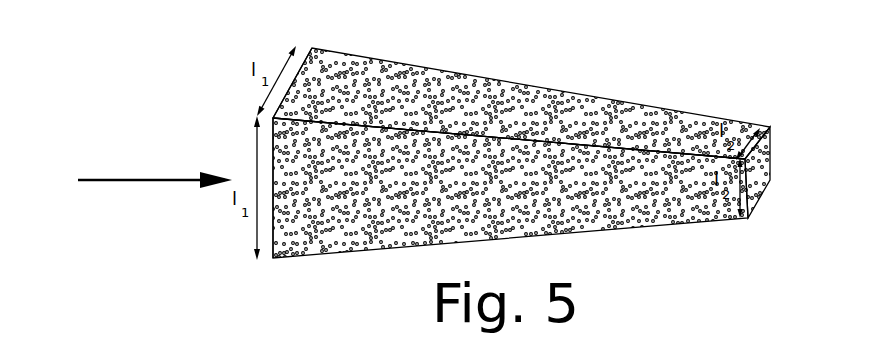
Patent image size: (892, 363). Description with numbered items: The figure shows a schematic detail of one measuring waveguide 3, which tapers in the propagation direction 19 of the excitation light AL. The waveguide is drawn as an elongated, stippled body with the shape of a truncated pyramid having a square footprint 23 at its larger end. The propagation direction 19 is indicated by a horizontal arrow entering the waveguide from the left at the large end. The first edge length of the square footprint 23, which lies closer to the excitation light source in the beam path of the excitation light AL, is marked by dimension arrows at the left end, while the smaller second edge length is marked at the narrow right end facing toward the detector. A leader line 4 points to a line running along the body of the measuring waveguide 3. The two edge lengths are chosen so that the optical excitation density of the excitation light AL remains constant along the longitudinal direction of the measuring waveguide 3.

The measuring waveguide 3 is at (608, 97).
The edge line of blade 4 is at (509, 87).
The square footprint 23 is at (236, 129).
The propagation direction 19 is at (126, 180).